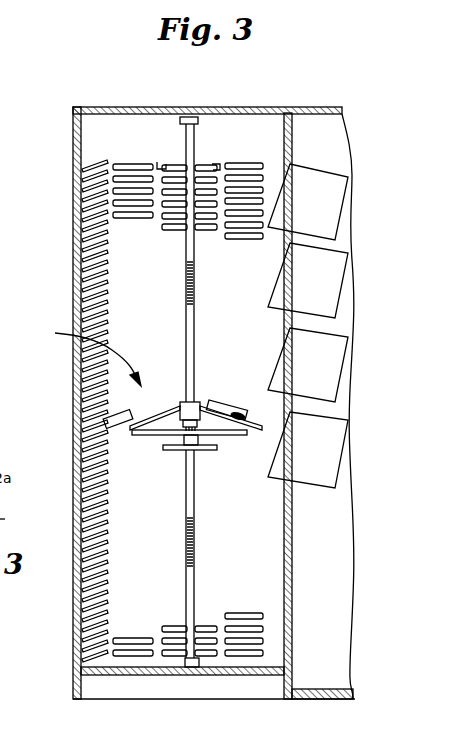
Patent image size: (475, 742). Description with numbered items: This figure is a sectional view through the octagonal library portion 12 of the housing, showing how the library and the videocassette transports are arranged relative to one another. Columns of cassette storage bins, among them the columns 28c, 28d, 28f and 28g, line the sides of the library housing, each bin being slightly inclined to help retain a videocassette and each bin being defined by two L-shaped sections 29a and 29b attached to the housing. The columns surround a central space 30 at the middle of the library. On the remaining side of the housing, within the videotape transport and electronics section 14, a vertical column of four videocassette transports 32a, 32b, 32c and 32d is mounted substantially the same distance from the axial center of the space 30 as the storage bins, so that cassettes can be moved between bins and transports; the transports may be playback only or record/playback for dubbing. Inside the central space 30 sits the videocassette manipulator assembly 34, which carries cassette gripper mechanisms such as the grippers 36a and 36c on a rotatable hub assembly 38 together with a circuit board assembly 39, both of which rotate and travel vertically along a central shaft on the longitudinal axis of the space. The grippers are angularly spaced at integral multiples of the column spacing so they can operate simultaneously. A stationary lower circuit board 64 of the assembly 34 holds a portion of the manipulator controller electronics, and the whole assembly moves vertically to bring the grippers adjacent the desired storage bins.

The library portion 12 is at (73, 679).
The videotape transport and electronics section 14 is at (322, 695).
The column of cassette storage bins 28c is at (122, 154).
The column of cassette storage bins 28d is at (98, 162).
The column of cassette storage bins 28f is at (205, 162).
The column of cassette storage bins 28g is at (247, 160).
The L-shaped section 29a is at (159, 161).
The L-shaped section 29b is at (221, 163).
The central space 30 is at (160, 502).
The videocassette transport 32a is at (343, 212).
The videocassette transport 32b is at (345, 292).
The videocassette transport 32c is at (345, 368).
The videocassette transport 32d is at (345, 465).
The videocassette manipulator assembly 34 is at (86, 357).
The cassette gripper mechanism 36a is at (218, 403).
The cassette gripper mechanism 36c is at (113, 413).
The hub assembly 38 is at (198, 401).
The circuit board assembly 39 is at (233, 436).
The lower circuit board 64 is at (198, 452).